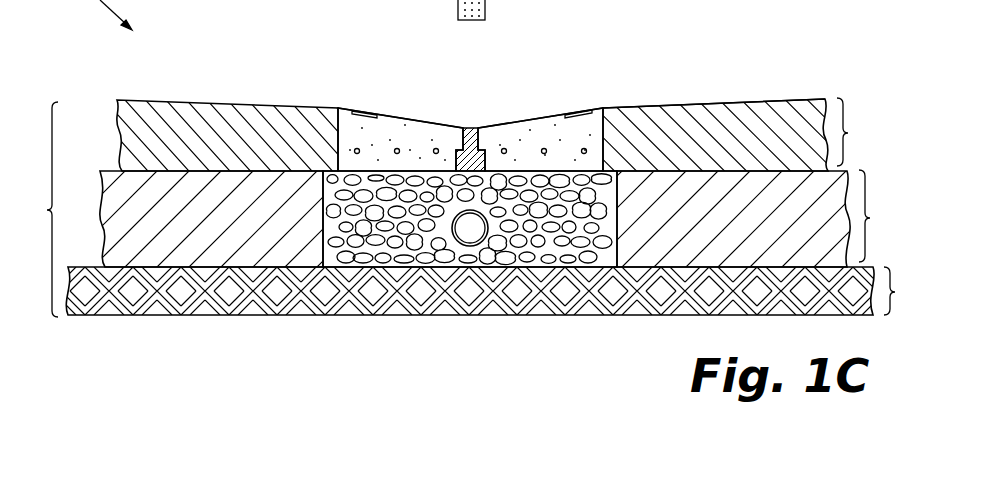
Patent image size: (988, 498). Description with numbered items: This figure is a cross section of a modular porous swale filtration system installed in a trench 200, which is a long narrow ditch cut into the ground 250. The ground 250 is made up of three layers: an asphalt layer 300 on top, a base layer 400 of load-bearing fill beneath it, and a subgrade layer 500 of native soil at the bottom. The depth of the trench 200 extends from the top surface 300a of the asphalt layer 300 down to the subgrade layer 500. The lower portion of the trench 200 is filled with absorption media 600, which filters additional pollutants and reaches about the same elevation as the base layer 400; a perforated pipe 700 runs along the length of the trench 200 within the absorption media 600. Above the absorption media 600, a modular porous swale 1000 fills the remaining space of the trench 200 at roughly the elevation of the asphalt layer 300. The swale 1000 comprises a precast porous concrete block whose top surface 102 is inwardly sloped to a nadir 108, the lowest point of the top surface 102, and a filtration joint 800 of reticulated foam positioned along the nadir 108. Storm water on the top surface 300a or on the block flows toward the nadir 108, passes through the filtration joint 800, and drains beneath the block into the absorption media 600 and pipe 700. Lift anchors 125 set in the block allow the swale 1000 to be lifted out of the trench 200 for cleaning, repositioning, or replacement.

The ground 250 is at (35, 209).
The asphalt layer 300 is at (491, 135).
The top surface of the asphalt layer 300a is at (807, 99).
The top surface 102 is at (414, 120).
The nadir 108 is at (480, 110).
The lift anchors 125 is at (360, 111).
The filtration joint 800 is at (470, 127).
The modular porous swale 1000 is at (575, 96).
The base layer 400 is at (472, 219).
The absorption media 600 is at (390, 247).
The perforated pipe 700 is at (472, 20).
The subgrade layer 500 is at (497, 291).
The trench 200 is at (617, 268).